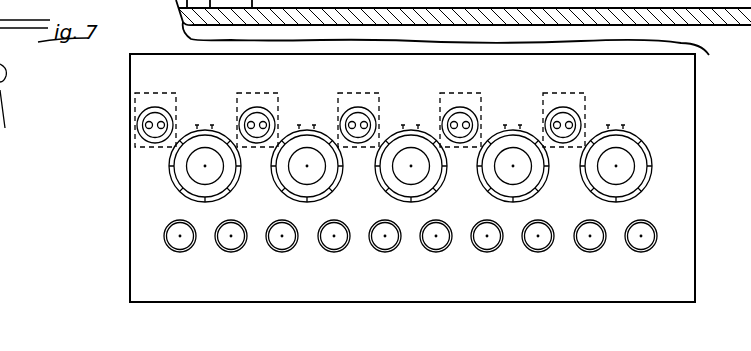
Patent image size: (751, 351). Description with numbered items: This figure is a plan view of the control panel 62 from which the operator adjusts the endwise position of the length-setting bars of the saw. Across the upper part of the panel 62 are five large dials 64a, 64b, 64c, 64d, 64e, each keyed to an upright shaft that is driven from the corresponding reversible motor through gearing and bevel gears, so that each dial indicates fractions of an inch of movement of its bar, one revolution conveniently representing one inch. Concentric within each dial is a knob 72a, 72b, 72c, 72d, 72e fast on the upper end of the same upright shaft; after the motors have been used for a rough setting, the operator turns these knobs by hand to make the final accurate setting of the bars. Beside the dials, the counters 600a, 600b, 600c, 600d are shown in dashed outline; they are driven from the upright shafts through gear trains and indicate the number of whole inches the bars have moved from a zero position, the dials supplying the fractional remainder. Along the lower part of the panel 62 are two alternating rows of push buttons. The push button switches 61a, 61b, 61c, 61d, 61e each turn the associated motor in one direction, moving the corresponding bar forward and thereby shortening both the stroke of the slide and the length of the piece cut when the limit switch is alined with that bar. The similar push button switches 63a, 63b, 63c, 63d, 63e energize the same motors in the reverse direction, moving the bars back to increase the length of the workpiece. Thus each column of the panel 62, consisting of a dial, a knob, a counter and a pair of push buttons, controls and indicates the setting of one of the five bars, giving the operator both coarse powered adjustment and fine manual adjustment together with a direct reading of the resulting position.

The panel 62 is at (687, 188).
The counter 600a is at (586, 111).
The counter 600b is at (482, 114).
The counter 600c is at (177, 110).
The counter 600d is at (283, 104).
The knob 72a is at (627, 160).
The knob 72b is at (517, 156).
The knob 72c is at (401, 152).
The knob 72d is at (310, 150).
The knob 72e is at (198, 177).
The dial 64a is at (640, 192).
The dial 64b is at (537, 192).
The dial 64c is at (435, 192).
The dial 64d is at (331, 192).
The dial 64e is at (229, 192).
The push button switch 61a is at (591, 241).
The push button switch 61b is at (488, 241).
The push button switch 61c is at (386, 241).
The push button switch 61d is at (283, 241).
The push button switch 61e is at (181, 241).
The push button switch 63a is at (642, 241).
The push button switch 63b is at (539, 241).
The push button switch 63c is at (437, 241).
The push button switch 63d is at (335, 241).
The push button switch 63e is at (232, 241).